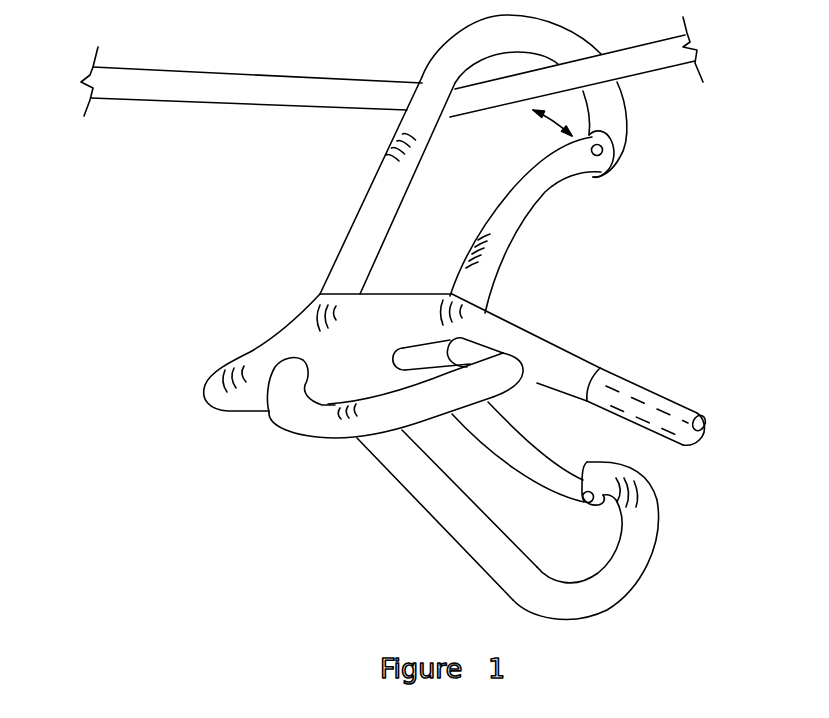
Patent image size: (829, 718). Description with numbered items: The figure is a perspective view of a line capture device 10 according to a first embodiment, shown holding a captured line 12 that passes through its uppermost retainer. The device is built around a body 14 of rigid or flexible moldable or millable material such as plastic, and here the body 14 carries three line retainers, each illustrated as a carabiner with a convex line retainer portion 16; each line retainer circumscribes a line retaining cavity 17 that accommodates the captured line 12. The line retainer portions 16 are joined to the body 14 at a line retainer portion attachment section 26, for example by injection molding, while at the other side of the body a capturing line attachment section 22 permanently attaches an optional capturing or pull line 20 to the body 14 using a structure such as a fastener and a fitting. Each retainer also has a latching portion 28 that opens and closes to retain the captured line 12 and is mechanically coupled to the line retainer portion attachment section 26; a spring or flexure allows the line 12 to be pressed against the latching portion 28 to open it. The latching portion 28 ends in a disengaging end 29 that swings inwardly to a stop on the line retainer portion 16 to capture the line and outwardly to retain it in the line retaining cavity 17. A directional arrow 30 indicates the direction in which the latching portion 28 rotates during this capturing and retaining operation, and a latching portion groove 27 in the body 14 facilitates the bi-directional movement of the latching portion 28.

The line capture device 10 is at (122, 200).
The captured line 12 is at (243, 107).
The body 14 is at (400, 273).
The line retainer portion 16 is at (613, 112).
The line retaining cavity 17 is at (470, 186).
The capturing line 20 is at (640, 397).
The capturing line attachment section 22 is at (550, 352).
The line retainer portion attachment section 26 is at (362, 373).
The latching portion groove 27 is at (427, 357).
The latching portion 28 is at (510, 230).
The disengaging end 29 is at (578, 488).
The directional arrow 30 is at (556, 124).